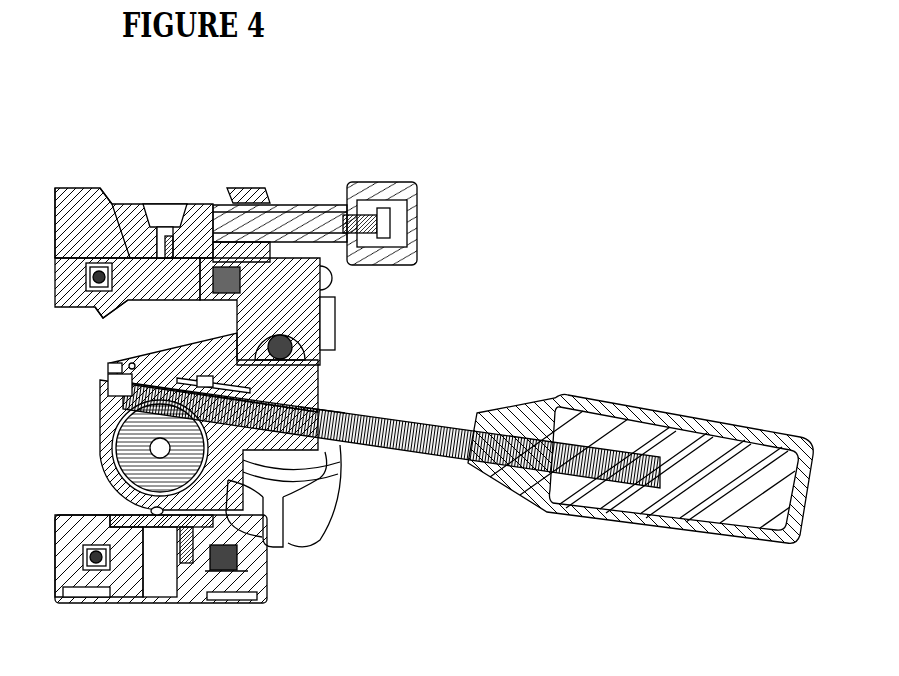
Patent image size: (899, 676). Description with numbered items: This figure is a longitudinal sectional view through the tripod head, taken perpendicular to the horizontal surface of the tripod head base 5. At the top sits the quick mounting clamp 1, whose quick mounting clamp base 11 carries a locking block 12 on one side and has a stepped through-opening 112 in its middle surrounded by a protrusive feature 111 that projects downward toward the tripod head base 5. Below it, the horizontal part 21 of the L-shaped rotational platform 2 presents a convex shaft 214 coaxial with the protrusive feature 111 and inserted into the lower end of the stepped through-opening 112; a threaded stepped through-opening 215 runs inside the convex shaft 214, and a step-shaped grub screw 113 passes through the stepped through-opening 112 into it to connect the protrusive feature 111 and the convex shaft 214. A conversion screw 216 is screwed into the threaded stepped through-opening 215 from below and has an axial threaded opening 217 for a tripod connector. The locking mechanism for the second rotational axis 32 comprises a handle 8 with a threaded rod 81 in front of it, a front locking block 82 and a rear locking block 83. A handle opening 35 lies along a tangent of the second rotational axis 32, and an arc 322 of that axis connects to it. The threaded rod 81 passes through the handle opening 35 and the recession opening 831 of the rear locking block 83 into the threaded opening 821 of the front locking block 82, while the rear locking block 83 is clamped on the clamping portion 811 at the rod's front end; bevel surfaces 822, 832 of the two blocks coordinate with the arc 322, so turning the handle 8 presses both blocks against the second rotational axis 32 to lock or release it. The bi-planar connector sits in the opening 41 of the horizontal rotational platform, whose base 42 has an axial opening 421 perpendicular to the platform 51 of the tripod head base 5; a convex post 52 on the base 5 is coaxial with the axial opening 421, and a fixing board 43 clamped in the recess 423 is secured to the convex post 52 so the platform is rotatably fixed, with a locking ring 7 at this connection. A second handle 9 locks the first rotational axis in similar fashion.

The quick mounting clamp 1 is at (52, 225).
The quick mounting clamp base 11 is at (58, 248).
The protrusive feature 111 is at (63, 202).
The stepped through-opening 112 is at (110, 223).
The step-shaped grub screw 113 is at (140, 213).
The conversion screw 216 is at (155, 258).
The threaded opening 217 is at (167, 250).
The convex shaft 214 is at (207, 205).
The locking block 12 is at (260, 190).
The L-shaped rotational platform 2 is at (50, 283).
The horizontal part 21 is at (297, 303).
The threaded stepped through-opening 215 is at (103, 298).
The arc 322 is at (118, 368).
The threaded opening 821 is at (132, 364).
The front locking block 82 is at (147, 370).
The rear locking block 83 is at (190, 380).
The recession opening 831 is at (212, 380).
The clamping portion 811 is at (313, 350).
The threaded rod 81 is at (323, 407).
The bevel surface 822 is at (108, 388).
The bevel surface 832 is at (115, 422).
The opening 41 is at (100, 487).
The fixing board 43 is at (107, 522).
The recess 423 is at (160, 520).
The axial opening 421 is at (83, 548).
The base 42 is at (70, 543).
The platform 51 is at (62, 587).
The tripod head base 5 is at (87, 605).
The handle opening 35 is at (318, 465).
The handle 9 is at (315, 500).
The second rotational axis 32 is at (232, 502).
The convex post 52 is at (238, 557).
The locking ring 7 is at (257, 578).
The handle 8 is at (617, 427).